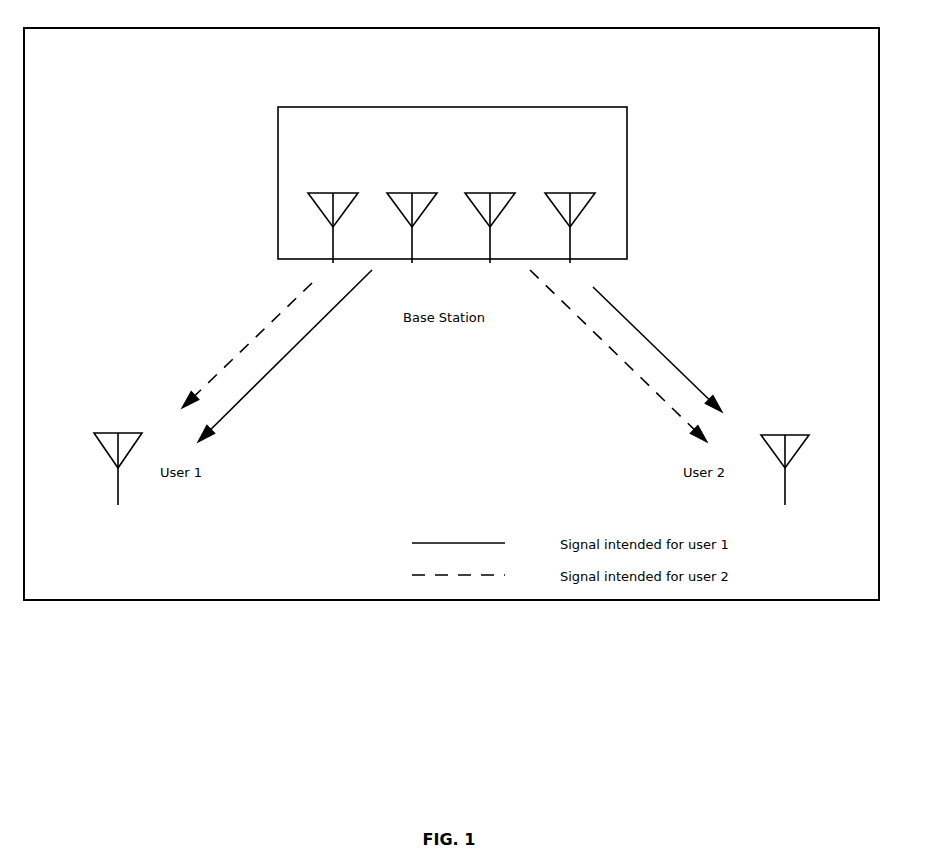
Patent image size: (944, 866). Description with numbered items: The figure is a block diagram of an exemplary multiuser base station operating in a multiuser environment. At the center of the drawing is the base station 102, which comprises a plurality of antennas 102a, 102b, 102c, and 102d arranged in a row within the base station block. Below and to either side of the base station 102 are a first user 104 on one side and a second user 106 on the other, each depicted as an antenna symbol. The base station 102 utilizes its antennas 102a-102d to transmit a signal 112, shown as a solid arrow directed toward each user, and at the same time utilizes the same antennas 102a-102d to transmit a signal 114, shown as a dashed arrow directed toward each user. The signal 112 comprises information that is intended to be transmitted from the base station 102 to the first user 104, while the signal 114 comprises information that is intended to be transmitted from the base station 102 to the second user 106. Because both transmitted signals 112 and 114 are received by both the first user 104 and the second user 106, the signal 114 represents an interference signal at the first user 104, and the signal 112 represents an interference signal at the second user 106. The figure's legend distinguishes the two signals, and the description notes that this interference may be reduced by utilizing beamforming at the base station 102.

The base station 102 is at (423, 107).
The antenna 102a is at (333, 193).
The antenna 102b is at (412, 193).
The antenna 102c is at (490, 193).
The antenna 102d is at (570, 193).
The first user 104 is at (120, 433).
The second user 106 is at (785, 435).
The signal 112 is at (302, 342).
The signal 114 is at (250, 342).